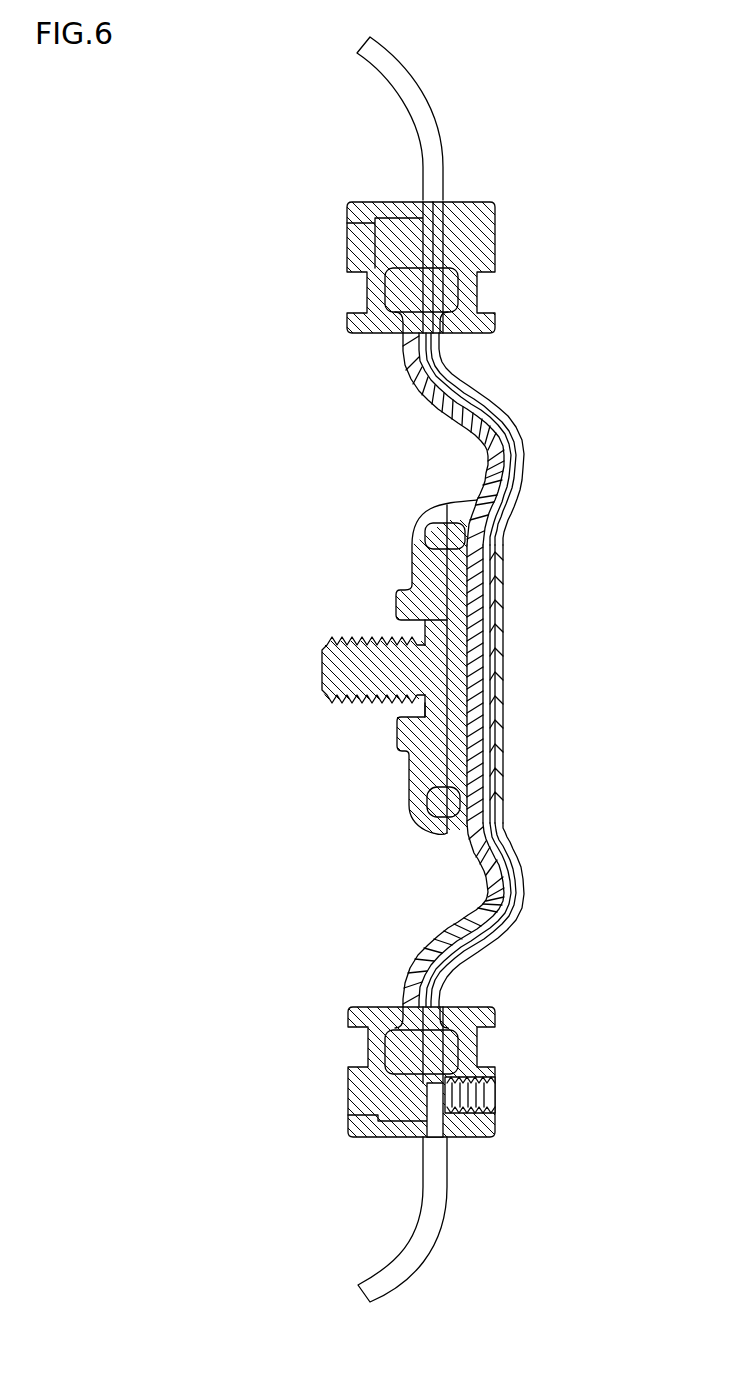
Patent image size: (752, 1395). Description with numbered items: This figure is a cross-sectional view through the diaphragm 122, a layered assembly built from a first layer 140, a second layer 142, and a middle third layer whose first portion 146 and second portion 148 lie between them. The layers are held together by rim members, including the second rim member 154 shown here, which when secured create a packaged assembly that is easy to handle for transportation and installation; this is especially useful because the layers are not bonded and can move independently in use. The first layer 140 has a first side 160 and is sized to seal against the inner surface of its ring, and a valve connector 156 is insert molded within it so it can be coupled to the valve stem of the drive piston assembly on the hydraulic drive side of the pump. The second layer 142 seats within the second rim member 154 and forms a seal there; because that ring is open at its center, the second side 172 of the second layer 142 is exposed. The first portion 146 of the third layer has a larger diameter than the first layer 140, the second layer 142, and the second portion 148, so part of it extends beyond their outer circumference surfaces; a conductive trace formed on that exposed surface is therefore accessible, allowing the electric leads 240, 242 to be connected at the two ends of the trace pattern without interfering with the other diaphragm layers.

The diaphragm 122 is at (475, 108).
The first layer 140 is at (347, 250).
The second layer 142 is at (520, 418).
The first portion of third layer 146 is at (483, 690).
The second portion of third layer 148 is at (495, 600).
The second rim member 154 is at (488, 200).
The valve connector 156 is at (325, 667).
The first side of first layer 160 is at (490, 895).
The second side of second layer 172 is at (525, 868).
The electric lead 240 is at (358, 1285).
The electric lead 242 is at (398, 60).